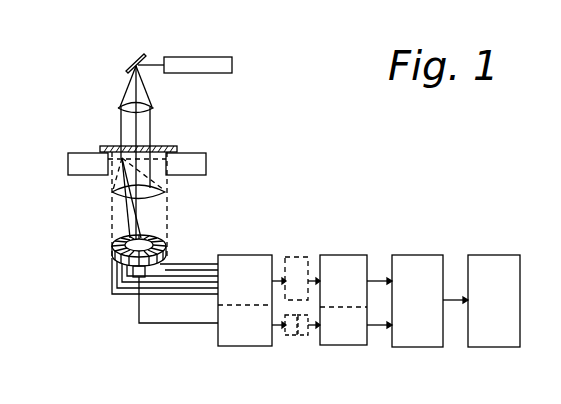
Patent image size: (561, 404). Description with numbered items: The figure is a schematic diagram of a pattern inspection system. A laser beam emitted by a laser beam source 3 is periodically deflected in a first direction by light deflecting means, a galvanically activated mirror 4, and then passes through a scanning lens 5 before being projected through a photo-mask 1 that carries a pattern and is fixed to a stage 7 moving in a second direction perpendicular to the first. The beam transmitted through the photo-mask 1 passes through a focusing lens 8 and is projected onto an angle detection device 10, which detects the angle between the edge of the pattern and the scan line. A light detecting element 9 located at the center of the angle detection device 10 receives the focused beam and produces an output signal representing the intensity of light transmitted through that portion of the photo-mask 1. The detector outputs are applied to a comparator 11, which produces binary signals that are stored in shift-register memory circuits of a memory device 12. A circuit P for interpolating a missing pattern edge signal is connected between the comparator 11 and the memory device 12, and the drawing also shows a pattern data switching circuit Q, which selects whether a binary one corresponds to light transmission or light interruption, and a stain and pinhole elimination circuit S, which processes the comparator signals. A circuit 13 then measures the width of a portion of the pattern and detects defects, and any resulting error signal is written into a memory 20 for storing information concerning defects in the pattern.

The photo-mask 1 is at (170, 145).
The laser beam source 3 is at (205, 57).
The galvanically activated mirror 4 is at (133, 55).
The scanning lens 5 is at (155, 105).
The stage 7 is at (68, 166).
The focusing lens 8 is at (166, 192).
The light detecting element 9 is at (160, 240).
The angle detection device 10 is at (167, 258).
The comparator 11 is at (243, 255).
The memory device 12 is at (345, 255).
The circuit for measuring pattern width and detecting defects 13 is at (416, 255).
The memory 20 is at (500, 255).
The circuit for interpolating a missing pattern edge signal P is at (293, 257).
The pattern data switching circuit Q is at (290, 336).
The stain and pinhole elimination circuit S is at (303, 336).